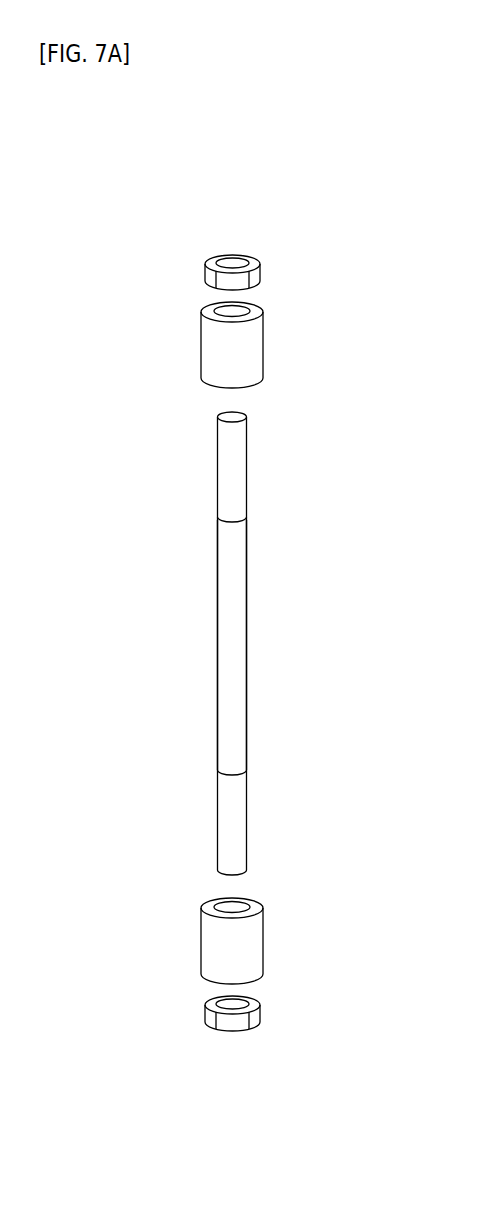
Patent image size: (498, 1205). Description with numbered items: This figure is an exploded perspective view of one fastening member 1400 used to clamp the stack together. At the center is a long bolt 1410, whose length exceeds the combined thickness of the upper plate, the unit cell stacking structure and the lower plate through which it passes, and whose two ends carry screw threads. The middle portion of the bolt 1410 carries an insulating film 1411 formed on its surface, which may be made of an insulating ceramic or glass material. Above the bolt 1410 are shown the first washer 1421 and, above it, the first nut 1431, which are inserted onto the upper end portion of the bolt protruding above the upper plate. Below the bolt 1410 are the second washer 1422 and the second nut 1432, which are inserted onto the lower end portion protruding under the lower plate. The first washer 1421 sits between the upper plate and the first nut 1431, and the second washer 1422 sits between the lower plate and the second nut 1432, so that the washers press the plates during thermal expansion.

The fastening member 1400 is at (263, 172).
The bolt 1410 is at (238, 465).
The insulating film 1411 is at (238, 577).
The first washer 1421 is at (212, 340).
The second washer 1422 is at (210, 940).
The first nut 1431 is at (208, 279).
The second nut 1432 is at (210, 1017).